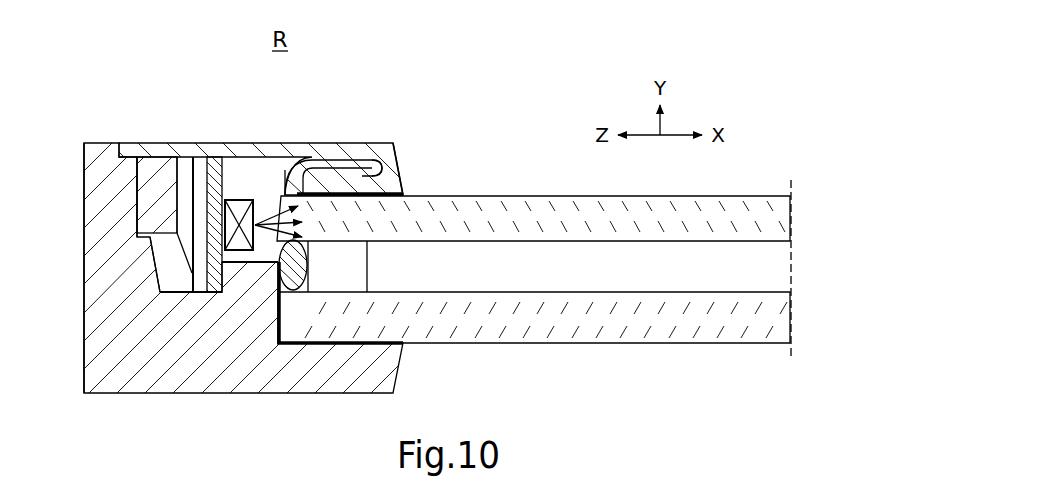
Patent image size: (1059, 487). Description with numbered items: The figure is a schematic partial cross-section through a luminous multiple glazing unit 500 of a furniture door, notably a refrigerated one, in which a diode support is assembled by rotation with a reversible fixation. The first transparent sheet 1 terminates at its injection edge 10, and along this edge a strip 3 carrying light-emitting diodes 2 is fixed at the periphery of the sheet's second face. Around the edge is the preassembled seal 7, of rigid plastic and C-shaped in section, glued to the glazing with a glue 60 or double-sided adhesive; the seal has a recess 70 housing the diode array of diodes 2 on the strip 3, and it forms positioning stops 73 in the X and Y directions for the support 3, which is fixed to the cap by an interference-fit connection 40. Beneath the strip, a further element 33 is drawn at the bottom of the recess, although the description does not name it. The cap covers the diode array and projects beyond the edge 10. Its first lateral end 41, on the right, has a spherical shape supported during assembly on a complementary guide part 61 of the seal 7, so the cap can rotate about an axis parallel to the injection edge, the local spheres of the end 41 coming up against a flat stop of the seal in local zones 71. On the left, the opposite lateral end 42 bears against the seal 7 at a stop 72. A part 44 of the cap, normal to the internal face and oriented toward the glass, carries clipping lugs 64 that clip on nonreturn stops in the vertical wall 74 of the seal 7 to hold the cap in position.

The luminous multiple glazing unit 500 is at (172, 55).
The first transparent sheet 1 is at (558, 200).
The light-emitting diodes 2 is at (185, 157).
The strip supporting light-emitting diodes 3 is at (213, 157).
The preassembled seal 7 is at (150, 384).
The edge 10 is at (310, 162).
The support portion 33 is at (218, 290).
The interference-fit connection 40 is at (249, 157).
The first lateral end 41 is at (402, 160).
The lateral end 42 is at (118, 143).
The part of the cap 44 is at (162, 157).
The glue 60 is at (407, 208).
The guide part 61 is at (397, 153).
The clipping lugs 64 is at (160, 262).
The recess 70 is at (268, 157).
The local zones 71 is at (358, 147).
The stop 72 is at (84, 160).
The positioning stops 73 is at (208, 286).
The vertical wall 74 is at (172, 200).